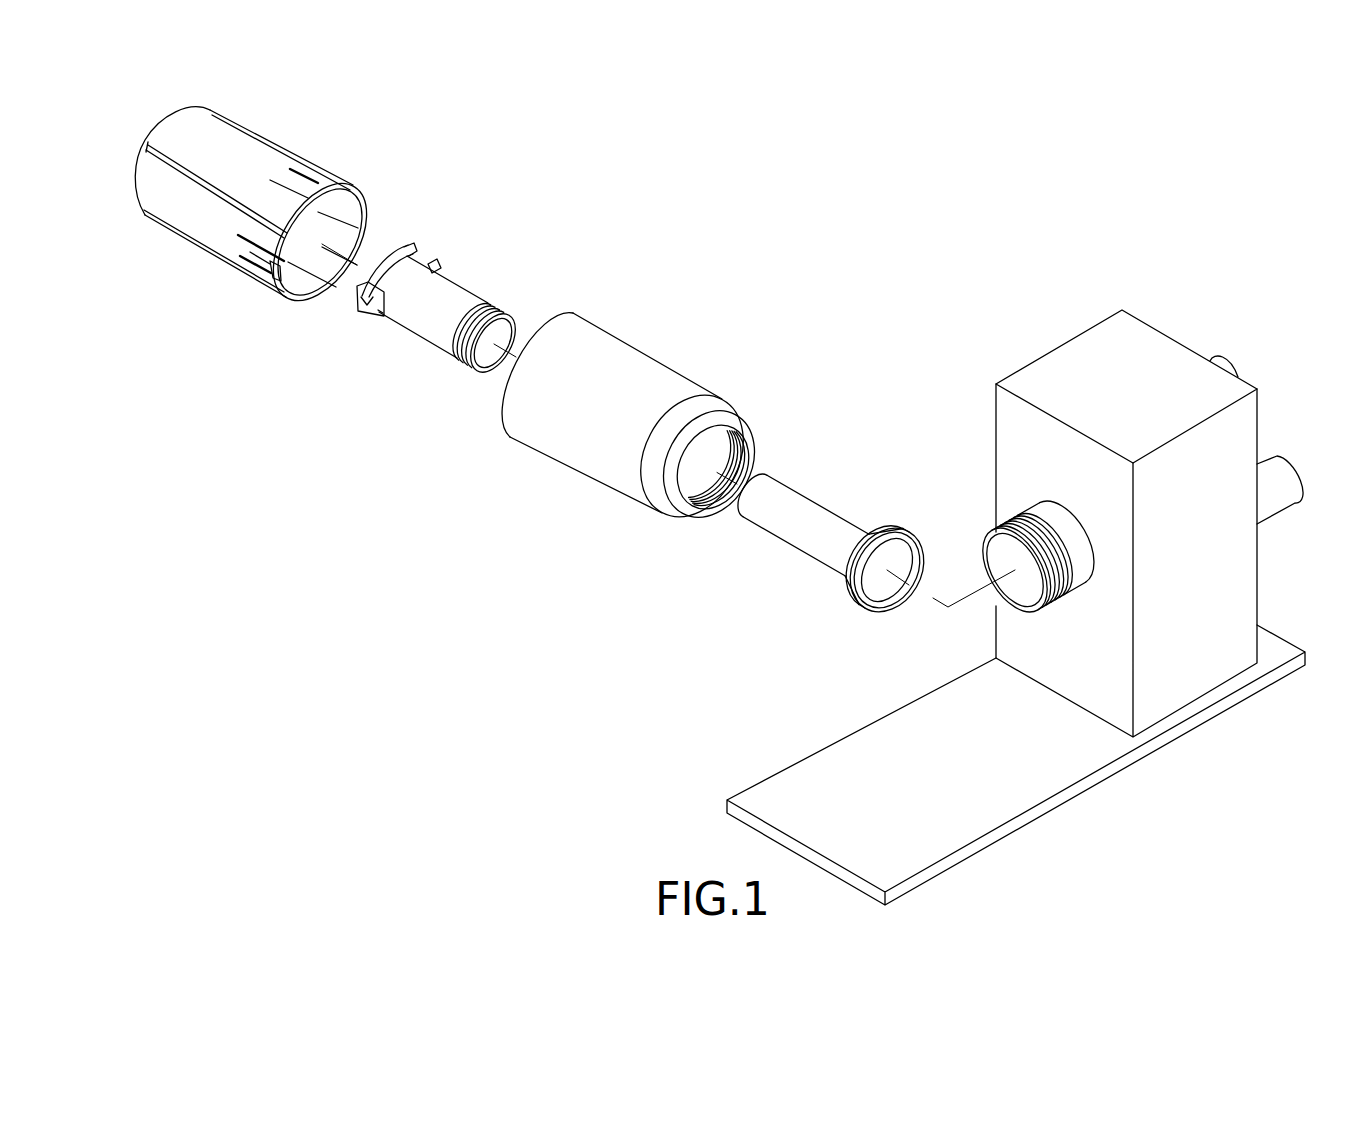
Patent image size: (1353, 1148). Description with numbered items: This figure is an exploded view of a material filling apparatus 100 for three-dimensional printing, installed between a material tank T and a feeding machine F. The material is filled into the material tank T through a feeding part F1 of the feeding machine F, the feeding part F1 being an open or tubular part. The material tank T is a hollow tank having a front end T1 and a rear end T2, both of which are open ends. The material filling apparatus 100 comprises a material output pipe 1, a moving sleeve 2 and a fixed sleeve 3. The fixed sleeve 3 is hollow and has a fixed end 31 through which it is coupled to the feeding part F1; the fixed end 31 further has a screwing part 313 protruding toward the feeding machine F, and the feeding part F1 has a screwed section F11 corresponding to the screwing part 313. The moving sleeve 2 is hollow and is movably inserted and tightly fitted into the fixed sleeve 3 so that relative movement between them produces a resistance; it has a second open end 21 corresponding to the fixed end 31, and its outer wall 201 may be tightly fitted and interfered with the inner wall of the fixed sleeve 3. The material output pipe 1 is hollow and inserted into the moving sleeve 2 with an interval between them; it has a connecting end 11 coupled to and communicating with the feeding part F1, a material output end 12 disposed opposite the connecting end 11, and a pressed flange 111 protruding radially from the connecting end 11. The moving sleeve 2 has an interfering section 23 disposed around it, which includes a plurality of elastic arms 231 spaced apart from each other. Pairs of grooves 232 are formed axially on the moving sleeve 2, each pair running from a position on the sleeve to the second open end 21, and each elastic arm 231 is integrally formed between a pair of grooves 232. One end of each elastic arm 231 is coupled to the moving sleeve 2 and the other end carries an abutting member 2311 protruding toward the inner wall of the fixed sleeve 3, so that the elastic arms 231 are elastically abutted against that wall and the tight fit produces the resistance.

The material filling apparatus 100 is at (263, 453).
The material output pipe 1 is at (830, 498).
The connecting end 11 is at (873, 607).
The pressed flange 111 is at (893, 530).
The material output end 12 is at (740, 500).
The moving sleeve 2 is at (302, 152).
The outer wall 201 is at (195, 125).
The second open end 21 is at (296, 298).
The interfering section 23 is at (305, 181).
The elastic arm 231 is at (254, 252).
The abutting member 2311 is at (272, 264).
The groove 232 is at (241, 236).
The fixed sleeve 3 is at (660, 352).
The fixed end 31 is at (667, 517).
The screwing part 313 is at (662, 487).
The material tank T is at (463, 283).
The front end T1 is at (484, 372).
The rear end T2 is at (364, 290).
The feeding machine F is at (1182, 337).
The feeding part F1 is at (1043, 507).
The screwed section F11 is at (1062, 592).